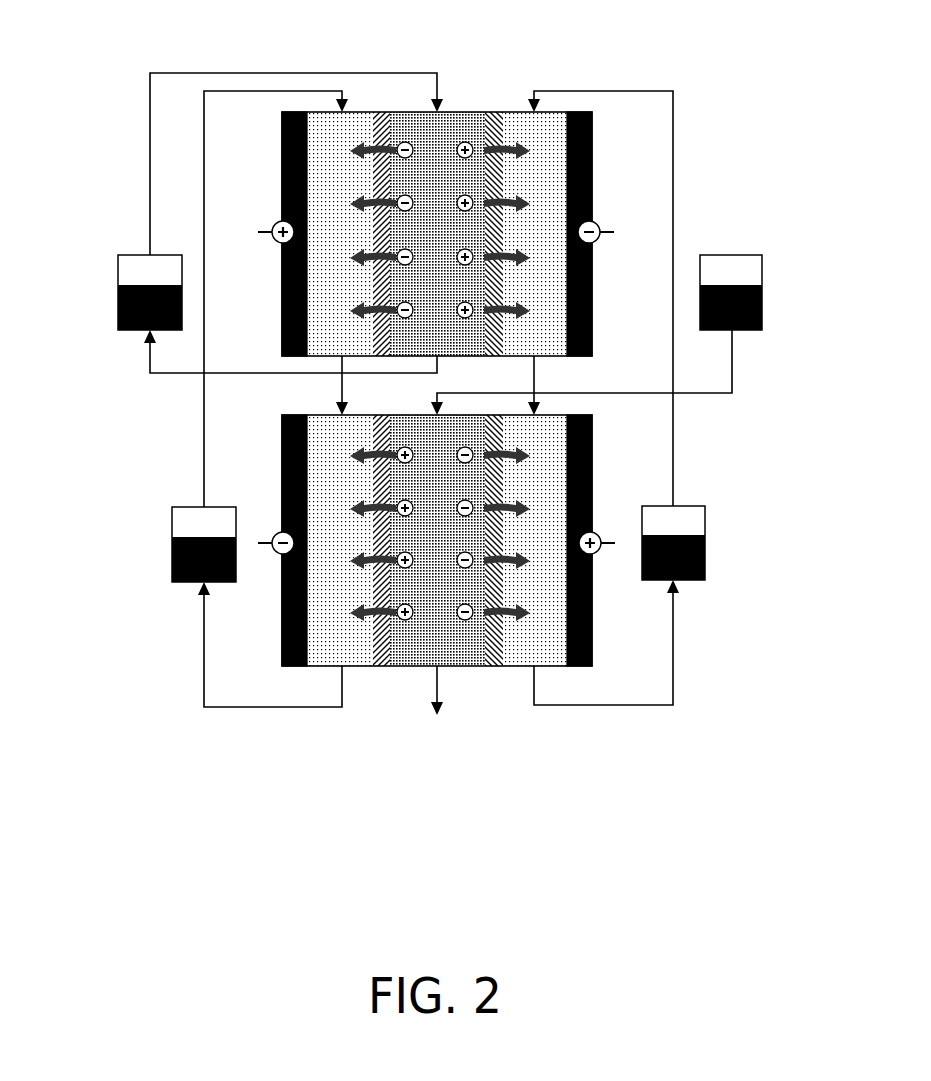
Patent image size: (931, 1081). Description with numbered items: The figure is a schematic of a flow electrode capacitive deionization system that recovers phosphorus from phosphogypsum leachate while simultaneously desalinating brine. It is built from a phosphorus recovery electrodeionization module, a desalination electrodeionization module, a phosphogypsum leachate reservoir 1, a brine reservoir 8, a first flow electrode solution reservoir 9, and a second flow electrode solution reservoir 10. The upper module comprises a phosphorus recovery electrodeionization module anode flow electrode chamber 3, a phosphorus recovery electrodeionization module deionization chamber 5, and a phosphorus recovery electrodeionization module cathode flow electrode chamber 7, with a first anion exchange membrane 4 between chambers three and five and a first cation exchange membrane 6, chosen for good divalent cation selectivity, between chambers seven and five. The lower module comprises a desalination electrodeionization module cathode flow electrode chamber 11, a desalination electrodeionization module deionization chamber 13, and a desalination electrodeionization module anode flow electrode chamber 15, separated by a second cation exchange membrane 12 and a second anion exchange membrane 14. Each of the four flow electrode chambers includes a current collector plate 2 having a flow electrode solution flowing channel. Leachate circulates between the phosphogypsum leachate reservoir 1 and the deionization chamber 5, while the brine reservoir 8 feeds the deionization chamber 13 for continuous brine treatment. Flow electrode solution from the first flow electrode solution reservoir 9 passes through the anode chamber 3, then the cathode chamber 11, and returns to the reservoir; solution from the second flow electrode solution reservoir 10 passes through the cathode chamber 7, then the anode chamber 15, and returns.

The phosphogypsum leachate reservoir 1 is at (120, 292).
The current collector plate 2 is at (283, 138).
The phosphorus recovery electrodeionization module anode flow electrode chamber 3 is at (330, 123).
The first anion exchange membrane 4 is at (380, 118).
The phosphorus recovery electrodeionization module deionization chamber 5 is at (450, 118).
The first cation exchange membrane 6 is at (497, 117).
The phosphorus recovery electrodeionization module cathode flow electrode chamber 7 is at (548, 138).
The brine reservoir 8 is at (763, 292).
The first flow electrode solution reservoir 9 is at (173, 543).
The second flow electrode solution reservoir 10 is at (705, 543).
The desalination electrodeionization module cathode flow electrode chamber 11 is at (327, 652).
The second cation exchange membrane 12 is at (382, 653).
The desalination electrodeionization module deionization chamber 13 is at (458, 653).
The second anion exchange membrane 14 is at (487, 655).
The desalination electrodeionization module anode flow electrode chamber 15 is at (537, 645).